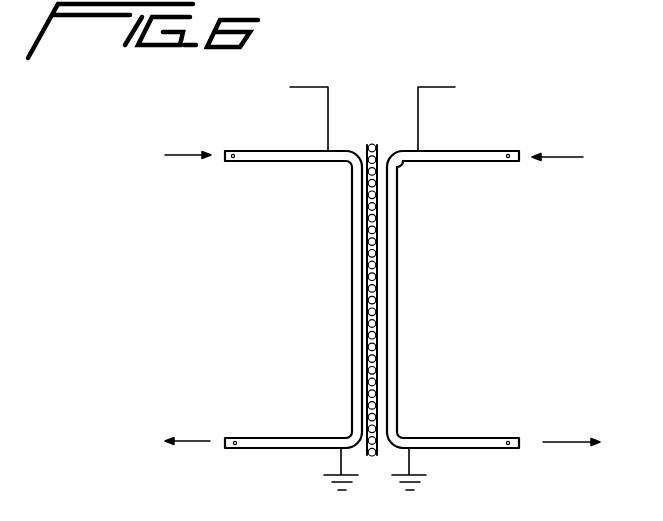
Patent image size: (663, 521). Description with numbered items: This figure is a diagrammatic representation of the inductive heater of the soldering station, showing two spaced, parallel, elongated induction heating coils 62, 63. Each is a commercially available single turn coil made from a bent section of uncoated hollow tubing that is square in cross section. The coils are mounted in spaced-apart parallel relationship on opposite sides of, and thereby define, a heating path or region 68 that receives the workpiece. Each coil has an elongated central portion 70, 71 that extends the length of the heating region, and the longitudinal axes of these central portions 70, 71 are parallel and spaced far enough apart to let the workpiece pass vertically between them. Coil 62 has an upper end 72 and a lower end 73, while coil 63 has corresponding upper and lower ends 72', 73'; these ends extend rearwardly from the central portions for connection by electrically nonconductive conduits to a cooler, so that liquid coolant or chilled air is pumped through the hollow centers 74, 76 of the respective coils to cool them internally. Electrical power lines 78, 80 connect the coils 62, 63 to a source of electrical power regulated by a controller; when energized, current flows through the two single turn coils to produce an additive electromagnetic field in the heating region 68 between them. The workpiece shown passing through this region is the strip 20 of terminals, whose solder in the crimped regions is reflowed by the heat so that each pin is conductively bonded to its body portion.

The strip 20 is at (372, 144).
The induction heating coil 62 is at (279, 271).
The induction heating coil 63 is at (476, 271).
The heating region 68 is at (363, 427).
The central portion 70 is at (352, 318).
The central portion 71 is at (397, 333).
The upper end 72 is at (279, 156).
The upper end 72' is at (476, 155).
The lower end 73 is at (293, 417).
The lower end 73' is at (453, 417).
The hollow center 74 is at (233, 151).
The hollow center 76 is at (510, 151).
The electrical power line 78 is at (328, 102).
The electrical power line 80 is at (418, 87).